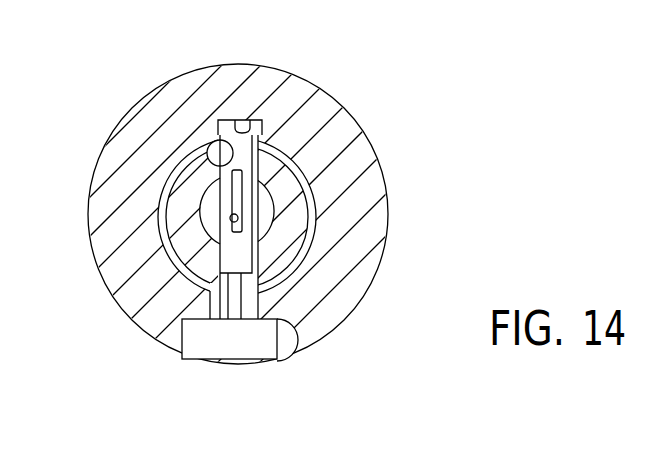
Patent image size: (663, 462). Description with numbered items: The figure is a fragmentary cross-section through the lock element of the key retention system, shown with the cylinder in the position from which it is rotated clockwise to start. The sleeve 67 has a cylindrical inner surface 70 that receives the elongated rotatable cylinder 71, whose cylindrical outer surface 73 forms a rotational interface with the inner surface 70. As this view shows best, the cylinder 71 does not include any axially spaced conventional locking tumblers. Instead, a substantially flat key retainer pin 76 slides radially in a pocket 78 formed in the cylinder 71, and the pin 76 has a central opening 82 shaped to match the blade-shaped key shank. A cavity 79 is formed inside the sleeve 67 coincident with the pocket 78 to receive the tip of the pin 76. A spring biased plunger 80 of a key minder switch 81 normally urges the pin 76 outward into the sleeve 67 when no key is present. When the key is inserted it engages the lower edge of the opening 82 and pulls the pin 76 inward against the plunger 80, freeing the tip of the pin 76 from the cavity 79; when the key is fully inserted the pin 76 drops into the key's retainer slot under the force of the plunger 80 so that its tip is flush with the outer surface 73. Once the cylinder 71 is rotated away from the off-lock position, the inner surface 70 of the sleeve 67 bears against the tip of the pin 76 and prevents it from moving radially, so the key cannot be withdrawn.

The sleeve 67 is at (358, 157).
The inner surface 70 is at (168, 180).
The cylinder 71 is at (295, 234).
The outer surface 73 is at (125, 313).
The key retainer pin 76 is at (256, 238).
The pocket 78 is at (218, 132).
The cavity 79 is at (262, 120).
The plunger 80 is at (256, 306).
The key minder switch 81 is at (210, 362).
The central opening 82 is at (232, 224).